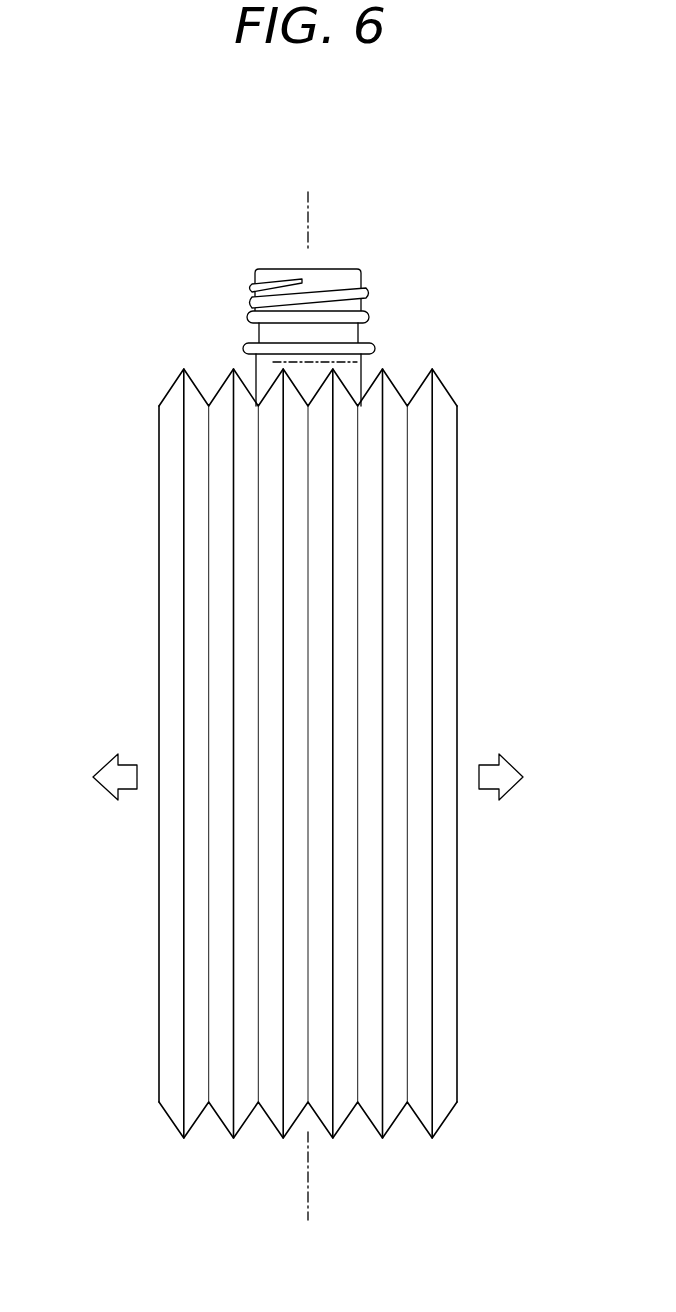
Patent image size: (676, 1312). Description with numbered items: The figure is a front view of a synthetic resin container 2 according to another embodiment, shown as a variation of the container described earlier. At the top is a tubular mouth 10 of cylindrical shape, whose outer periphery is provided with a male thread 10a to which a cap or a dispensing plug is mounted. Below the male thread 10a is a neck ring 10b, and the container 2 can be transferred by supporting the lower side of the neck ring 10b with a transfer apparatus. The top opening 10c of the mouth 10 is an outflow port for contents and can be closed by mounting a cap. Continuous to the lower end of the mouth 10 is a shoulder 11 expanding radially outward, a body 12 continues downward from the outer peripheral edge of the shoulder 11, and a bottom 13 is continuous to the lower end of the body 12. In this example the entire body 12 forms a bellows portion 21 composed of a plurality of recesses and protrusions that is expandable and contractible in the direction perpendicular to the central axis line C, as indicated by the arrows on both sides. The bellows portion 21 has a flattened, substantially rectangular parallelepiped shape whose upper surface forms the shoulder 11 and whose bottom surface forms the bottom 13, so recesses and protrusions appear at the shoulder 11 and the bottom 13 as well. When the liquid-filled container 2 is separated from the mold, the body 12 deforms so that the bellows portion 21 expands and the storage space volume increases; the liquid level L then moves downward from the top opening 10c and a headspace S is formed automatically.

The synthetic resin container 2 is at (506, 264).
The mouth 10 is at (364, 310).
The male thread 10a is at (370, 293).
The neck ring 10b is at (376, 347).
The top opening 10c is at (345, 269).
The shoulder 11 is at (394, 377).
The body 12 is at (460, 650).
The bottom 13 is at (389, 1134).
The bellows portion 21 is at (156, 545).
The central axis line C is at (309, 690).
The headspace S is at (277, 331).
The liquid level L is at (273, 362).